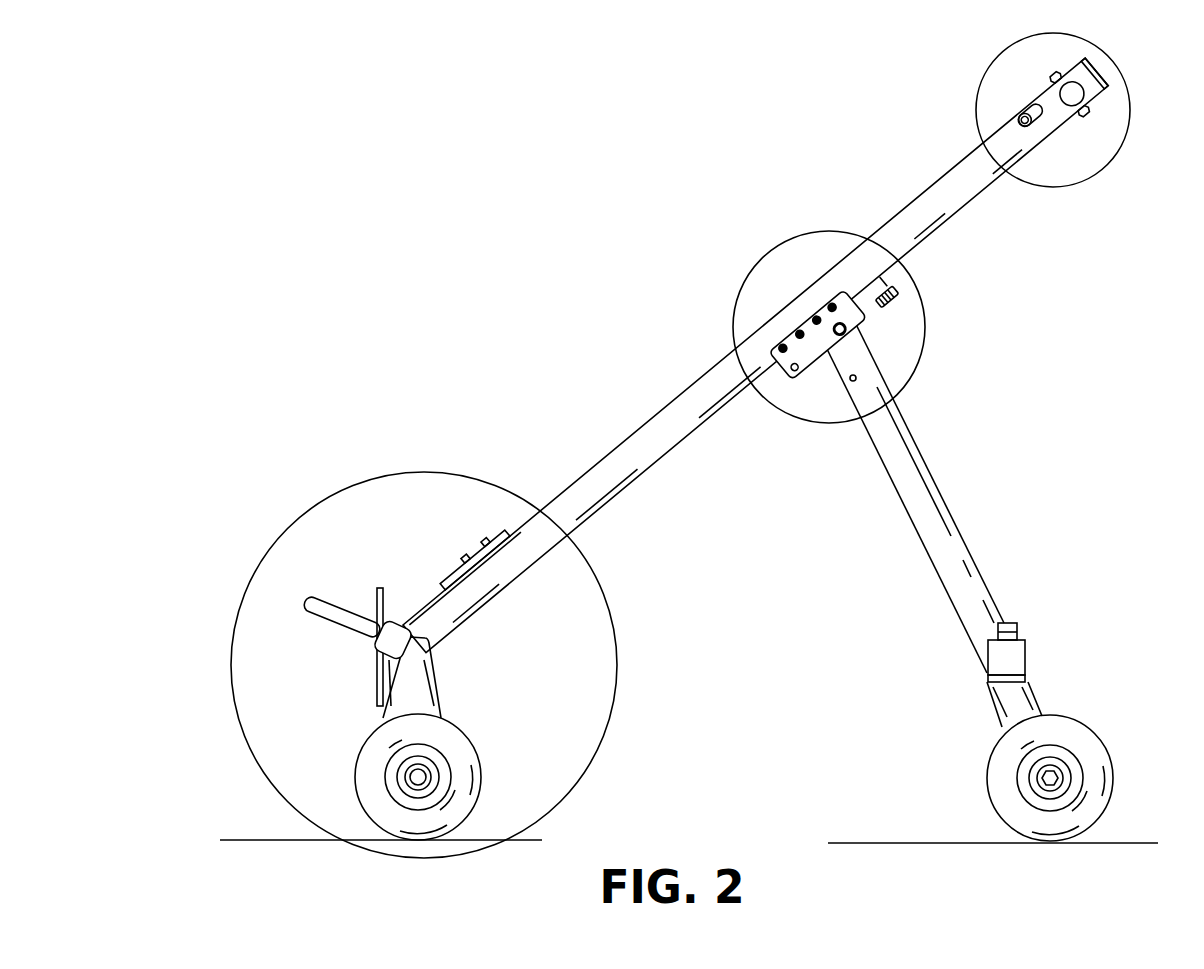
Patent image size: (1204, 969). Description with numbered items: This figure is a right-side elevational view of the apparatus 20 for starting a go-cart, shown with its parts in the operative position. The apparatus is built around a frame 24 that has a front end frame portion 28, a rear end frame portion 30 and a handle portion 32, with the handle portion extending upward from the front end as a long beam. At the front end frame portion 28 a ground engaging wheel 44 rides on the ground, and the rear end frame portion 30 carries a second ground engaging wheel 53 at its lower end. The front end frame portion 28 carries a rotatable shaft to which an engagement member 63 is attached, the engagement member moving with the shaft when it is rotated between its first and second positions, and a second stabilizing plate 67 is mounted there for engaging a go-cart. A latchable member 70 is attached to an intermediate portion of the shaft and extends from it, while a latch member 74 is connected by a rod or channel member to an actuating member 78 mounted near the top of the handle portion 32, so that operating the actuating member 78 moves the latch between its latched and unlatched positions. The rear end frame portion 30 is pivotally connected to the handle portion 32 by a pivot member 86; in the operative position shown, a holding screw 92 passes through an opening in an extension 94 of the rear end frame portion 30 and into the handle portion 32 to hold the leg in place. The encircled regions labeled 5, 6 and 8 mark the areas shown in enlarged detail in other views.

The detail view circle of upper beam end (FIG. 5) 5 is at (1130, 108).
The detail view circle of handle and front wheel (FIG. 6) 6 is at (282, 527).
The detail view circle of adjustment plate (FIG. 8) 8 is at (757, 268).
The apparatus for starting a go-cart 20 is at (575, 385).
The frame 24 is at (645, 462).
The front end frame portion 28 is at (437, 631).
The rear end frame portion 30 is at (965, 588).
The handle portion 32 is at (975, 185).
The ground engaging wheel 44 is at (457, 751).
The ground engaging wheel 53 is at (1090, 753).
The engagement member 63 is at (322, 612).
The second stabilizing plate 67 is at (378, 599).
The latchable member 70 is at (453, 583).
The latch member 74 is at (463, 543).
The actuating member 78 is at (1022, 117).
The pivot member 86 is at (848, 329).
The holding screw 92 is at (898, 298).
The extension 94 is at (888, 282).